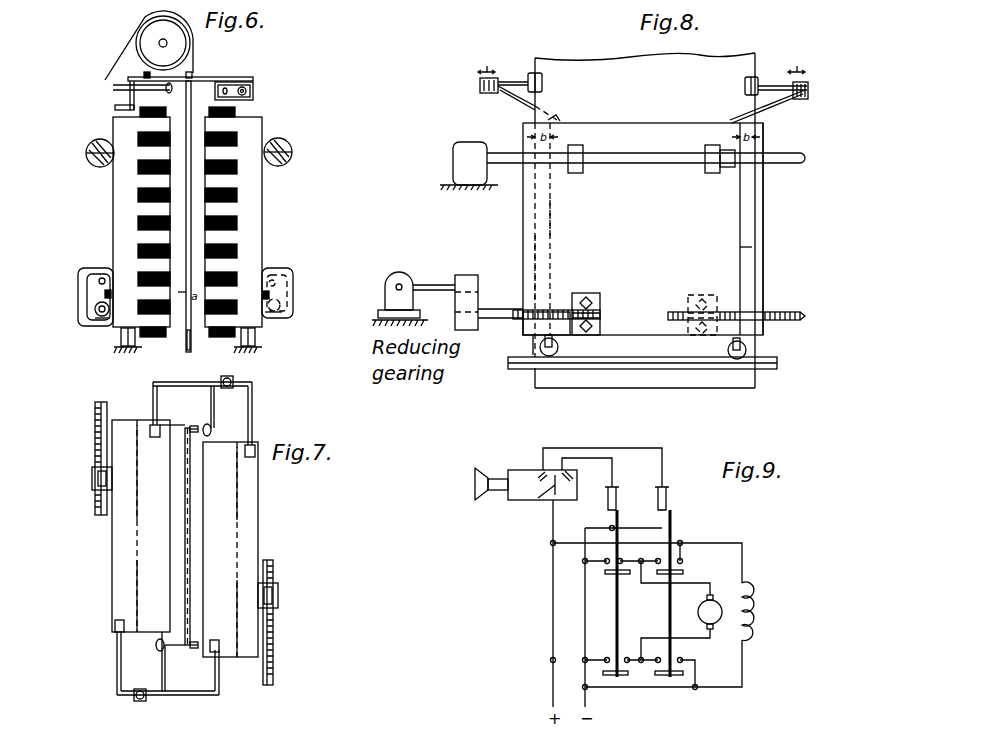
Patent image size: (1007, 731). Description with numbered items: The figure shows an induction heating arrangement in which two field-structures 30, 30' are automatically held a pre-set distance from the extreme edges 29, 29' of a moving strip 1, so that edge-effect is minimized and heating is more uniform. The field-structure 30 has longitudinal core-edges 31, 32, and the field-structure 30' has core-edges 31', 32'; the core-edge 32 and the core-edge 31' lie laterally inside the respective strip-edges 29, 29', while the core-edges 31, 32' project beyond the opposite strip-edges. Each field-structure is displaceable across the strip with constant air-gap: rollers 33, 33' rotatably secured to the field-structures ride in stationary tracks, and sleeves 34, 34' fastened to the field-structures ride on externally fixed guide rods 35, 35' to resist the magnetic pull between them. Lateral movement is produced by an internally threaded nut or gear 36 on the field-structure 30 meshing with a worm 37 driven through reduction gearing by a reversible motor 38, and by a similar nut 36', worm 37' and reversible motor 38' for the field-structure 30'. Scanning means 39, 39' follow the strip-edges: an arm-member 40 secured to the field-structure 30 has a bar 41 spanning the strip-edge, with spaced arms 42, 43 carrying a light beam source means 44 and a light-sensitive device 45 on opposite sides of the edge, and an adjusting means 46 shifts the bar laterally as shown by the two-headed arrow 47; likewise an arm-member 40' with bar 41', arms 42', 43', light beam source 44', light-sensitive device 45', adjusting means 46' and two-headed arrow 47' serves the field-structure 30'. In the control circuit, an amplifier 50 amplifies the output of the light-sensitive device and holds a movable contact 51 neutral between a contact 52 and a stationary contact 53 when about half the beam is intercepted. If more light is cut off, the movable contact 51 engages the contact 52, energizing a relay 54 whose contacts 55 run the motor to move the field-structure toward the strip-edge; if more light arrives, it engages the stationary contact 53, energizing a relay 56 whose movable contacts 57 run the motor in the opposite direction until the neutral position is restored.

In FIG. 6, the strip 1 is at (186, 340).
In FIG. 7, the strip 1 is at (189, 525).
In FIG. 8, the strip 1 is at (608, 54).
In FIG. 7, the extreme left-hand edge of the strip 29 is at (187, 655).
In FIG. 8, the extreme left-hand edge of the strip 29 is at (524, 74).
In FIG. 7, the extreme right-hand edge of the strip 29' is at (188, 418).
In FIG. 8, the extreme right-hand edge of the strip 29' is at (766, 71).
In FIG. 6, the field-structure 30 is at (130, 222).
In FIG. 7, the field-structure 30 is at (124, 526).
In FIG. 8, the field-structure 30 is at (648, 229).
In FIG. 6, the field-structure 30' is at (252, 222).
In FIG. 7, the field-structure 30' is at (253, 549).
In FIG. 7, the core-edge 31 is at (130, 460).
In FIG. 8, the core-edge 31 is at (781, 229).
In FIG. 7, the core-edge 31' is at (235, 471).
In FIG. 8, the core-edge 31' is at (769, 243).
In FIG. 7, the core-edge 32 is at (136, 608).
In FIG. 8, the core-edge 32 is at (522, 267).
In FIG. 7, the core-edge 32' is at (240, 627).
In FIG. 8, the core-edge 32' is at (521, 220).
In FIG. 6, the rollers 33 is at (113, 343).
In FIG. 6, the rollers 33' is at (264, 343).
In FIG. 8, the rollers 33' is at (642, 352).
In FIG. 6, the sleeve 34 is at (97, 145).
In FIG. 6, the sleeve 34' is at (291, 143).
In FIG. 8, the sleeve 34' is at (651, 149).
In FIG. 6, the guide rod 35 is at (87, 164).
In FIG. 8, the guide rod 35 is at (790, 148).
In FIG. 6, the guide rod 35' is at (297, 153).
In FIG. 8, the guide rod 35' is at (601, 168).
In FIG. 6, the internally threaded nut or gear 36 is at (85, 330).
In FIG. 7, the internally threaded nut or gear 36 is at (87, 481).
In FIG. 8, the internally threaded nut or gear 36 is at (704, 306).
In FIG. 6, the internally threaded nut or gear 36' is at (294, 314).
In FIG. 7, the internally threaded nut or gear 36' is at (288, 595).
In FIG. 8, the internally threaded nut or gear 36' is at (599, 313).
In FIG. 6, the worm 37 is at (78, 315).
In FIG. 7, the worm 37 is at (84, 458).
In FIG. 8, the worm 37 is at (737, 306).
In FIG. 6, the worm 37' is at (295, 299).
In FIG. 7, the worm 37' is at (288, 622).
In FIG. 8, the worm 37' is at (539, 331).
In FIG. 6, the reversible motor 38 is at (92, 286).
In FIG. 9, the reversible motor 38 is at (681, 610).
In FIG. 6, the reversible motor 38' is at (287, 282).
In FIG. 8, the reversible motor 38' is at (425, 293).
In FIG. 7, the scanning means 39 is at (171, 681).
In FIG. 7, the scanning means 39' is at (180, 405).
In FIG. 6, the arm-member 40 is at (129, 96).
In FIG. 7, the arm-member 40 is at (101, 663).
In FIG. 8, the arm-member 40 is at (522, 101).
In FIG. 7, the arm-member 40' is at (266, 413).
In FIG. 8, the arm-member 40' is at (768, 104).
In FIG. 6, the bar 41 is at (179, 181).
In FIG. 7, the bar 41 is at (168, 705).
In FIG. 7, the bar 41' is at (202, 373).
In FIG. 7, the arm 42 is at (232, 672).
In FIG. 7, the arm 42' is at (141, 403).
In FIG. 7, the arm 43 is at (178, 661).
In FIG. 7, the arm 43' is at (222, 407).
In FIG. 6, the light beam source means 44 is at (253, 91).
In FIG. 7, the light beam source means 44 is at (170, 633).
In FIG. 7, the light beam source 44' is at (197, 441).
In FIG. 6, the light-sensitive device 45 is at (176, 95).
In FIG. 7, the light-sensitive device 45 is at (148, 656).
In FIG. 9, the light-sensitive device 45 is at (492, 460).
In FIG. 7, the light-sensitive device 45' is at (220, 422).
In FIG. 6, the adjusting means 46 is at (136, 70).
In FIG. 7, the adjusting means 46 is at (127, 705).
In FIG. 8, the adjusting means 46 is at (472, 91).
In FIG. 7, the adjusting means 46' is at (225, 374).
In FIG. 8, the adjusting means 46' is at (812, 82).
In FIG. 8, the two-headed arrow 47 is at (486, 60).
In FIG. 8, the two-headed arrow 47' is at (807, 61).
In FIG. 9, the amplifier 50 is at (510, 500).
In FIG. 9, the movable contact 51 is at (548, 497).
In FIG. 9, the contact 52 is at (542, 485).
In FIG. 9, the stationary contact 53 is at (573, 478).
In FIG. 9, the relay 54 is at (670, 482).
In FIG. 9, the contacts 55 is at (684, 574).
In FIG. 9, the relay 56 is at (622, 484).
In FIG. 9, the movable contacts 57 is at (608, 576).